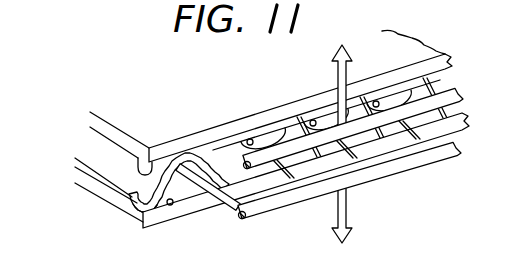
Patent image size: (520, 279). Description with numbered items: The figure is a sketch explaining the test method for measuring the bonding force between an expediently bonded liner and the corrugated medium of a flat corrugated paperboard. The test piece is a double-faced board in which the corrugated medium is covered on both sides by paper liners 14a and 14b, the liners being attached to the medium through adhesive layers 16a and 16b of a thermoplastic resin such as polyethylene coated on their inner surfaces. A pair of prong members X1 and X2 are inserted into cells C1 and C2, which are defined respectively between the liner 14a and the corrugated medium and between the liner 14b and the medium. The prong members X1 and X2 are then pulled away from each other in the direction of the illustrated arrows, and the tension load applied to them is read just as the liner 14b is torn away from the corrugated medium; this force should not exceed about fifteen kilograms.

The liner 14a is at (260, 113).
The liner 14b is at (205, 204).
The adhesive layer 16a is at (148, 147).
The adhesive layer 16b is at (171, 206).
The cell C1 is at (205, 160).
The cell C2 is at (178, 188).
The prong member X1 is at (460, 99).
The prong member X2 is at (457, 153).